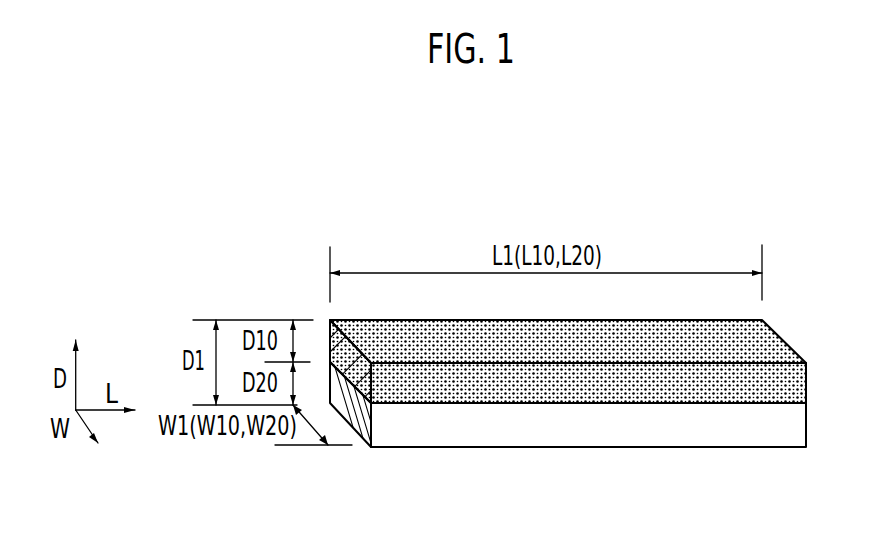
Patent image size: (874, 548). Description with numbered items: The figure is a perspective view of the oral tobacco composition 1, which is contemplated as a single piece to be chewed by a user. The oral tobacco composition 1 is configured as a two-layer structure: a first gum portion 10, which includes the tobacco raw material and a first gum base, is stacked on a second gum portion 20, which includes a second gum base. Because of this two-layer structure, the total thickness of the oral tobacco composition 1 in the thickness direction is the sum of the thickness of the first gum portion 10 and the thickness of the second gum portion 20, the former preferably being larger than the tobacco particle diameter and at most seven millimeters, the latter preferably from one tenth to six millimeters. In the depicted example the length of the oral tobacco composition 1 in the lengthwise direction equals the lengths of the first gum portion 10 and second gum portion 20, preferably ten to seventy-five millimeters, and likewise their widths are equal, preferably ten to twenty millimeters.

The oral tobacco composition 1 is at (589, 321).
The first gum portion 10 is at (758, 338).
The second gum portion 20 is at (743, 433).